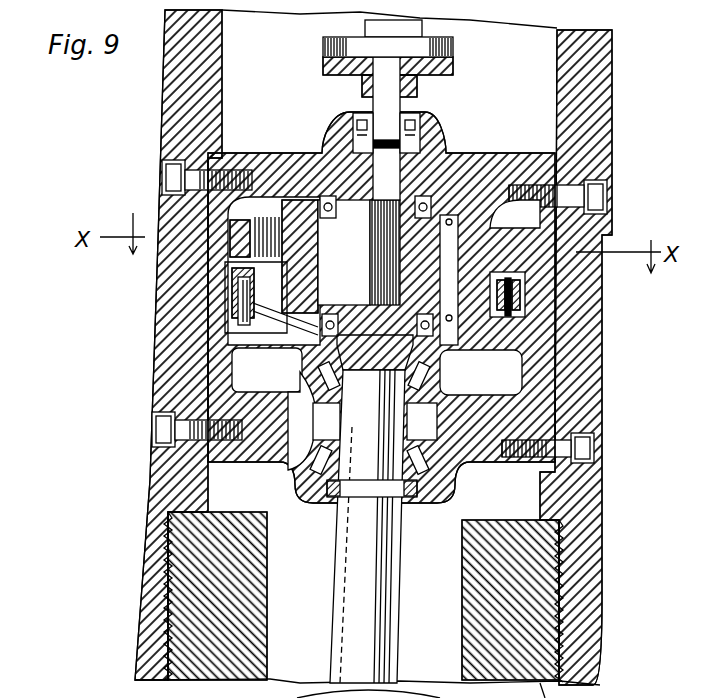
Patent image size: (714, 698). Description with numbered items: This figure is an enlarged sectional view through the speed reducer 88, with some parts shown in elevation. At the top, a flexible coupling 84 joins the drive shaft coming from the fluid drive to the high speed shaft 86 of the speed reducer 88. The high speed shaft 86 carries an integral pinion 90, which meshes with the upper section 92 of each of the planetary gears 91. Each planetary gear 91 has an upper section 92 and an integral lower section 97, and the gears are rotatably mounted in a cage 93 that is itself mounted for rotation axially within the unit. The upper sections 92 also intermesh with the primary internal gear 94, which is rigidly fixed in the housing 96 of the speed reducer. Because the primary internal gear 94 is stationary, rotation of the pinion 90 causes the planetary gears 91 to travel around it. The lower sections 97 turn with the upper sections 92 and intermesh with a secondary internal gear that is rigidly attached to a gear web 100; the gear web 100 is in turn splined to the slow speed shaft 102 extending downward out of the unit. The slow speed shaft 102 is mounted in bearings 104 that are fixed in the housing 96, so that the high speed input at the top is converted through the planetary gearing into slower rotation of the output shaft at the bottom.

The flexible coupling 84 is at (453, 68).
The high speed shaft 86 is at (392, 103).
The cage 93 is at (255, 283).
The upper section 92 is at (492, 225).
The primary internal gear 94 is at (600, 233).
The pinion 90 is at (373, 253).
The lower section 97 is at (470, 284).
The planetary gears 91 is at (480, 312).
The gear web 100 is at (467, 367).
The bearings 104 is at (307, 470).
The housing 96 is at (536, 405).
The speed reducer 88 is at (455, 490).
The slow speed shaft 102 is at (392, 598).